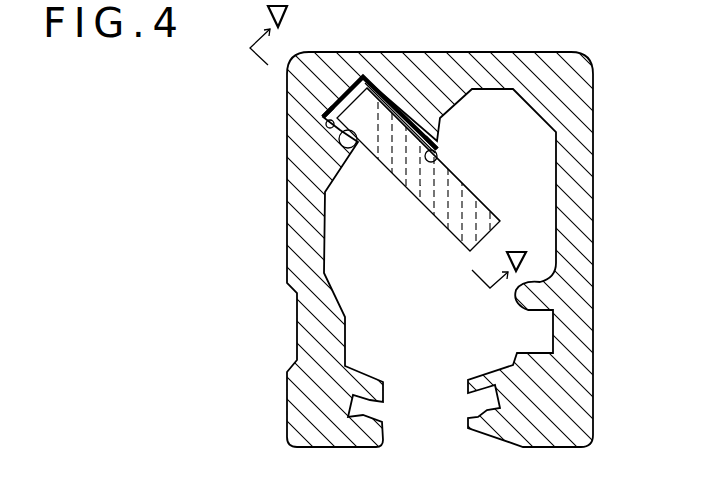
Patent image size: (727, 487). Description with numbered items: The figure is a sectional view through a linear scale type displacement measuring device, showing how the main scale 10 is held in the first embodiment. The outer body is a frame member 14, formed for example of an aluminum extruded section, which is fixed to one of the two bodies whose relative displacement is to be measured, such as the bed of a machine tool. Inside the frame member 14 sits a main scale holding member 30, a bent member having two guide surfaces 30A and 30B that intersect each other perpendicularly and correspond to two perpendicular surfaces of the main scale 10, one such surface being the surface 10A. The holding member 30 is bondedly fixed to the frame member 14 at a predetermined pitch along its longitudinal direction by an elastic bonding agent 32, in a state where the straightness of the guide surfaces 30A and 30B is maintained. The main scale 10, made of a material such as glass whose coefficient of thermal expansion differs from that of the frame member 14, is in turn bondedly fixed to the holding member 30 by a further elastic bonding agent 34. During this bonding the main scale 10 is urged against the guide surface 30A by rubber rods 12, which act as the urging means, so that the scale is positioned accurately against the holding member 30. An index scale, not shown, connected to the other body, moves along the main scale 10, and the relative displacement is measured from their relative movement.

The frame member 14 is at (593, 112).
The main scale 10 is at (460, 228).
The panel surface 10A is at (423, 207).
The elastic bonding agent 34 is at (420, 185).
The main scale holding member 30 is at (433, 147).
The elastic bonding agent 32 is at (433, 147).
The guide surface 30A is at (440, 122).
The guide surface 30B is at (333, 128).
The rubber rods 12 is at (358, 148).